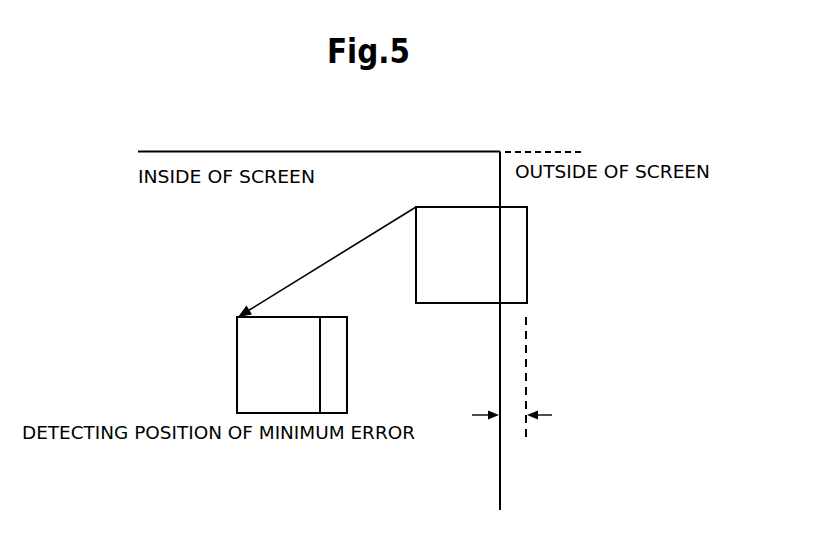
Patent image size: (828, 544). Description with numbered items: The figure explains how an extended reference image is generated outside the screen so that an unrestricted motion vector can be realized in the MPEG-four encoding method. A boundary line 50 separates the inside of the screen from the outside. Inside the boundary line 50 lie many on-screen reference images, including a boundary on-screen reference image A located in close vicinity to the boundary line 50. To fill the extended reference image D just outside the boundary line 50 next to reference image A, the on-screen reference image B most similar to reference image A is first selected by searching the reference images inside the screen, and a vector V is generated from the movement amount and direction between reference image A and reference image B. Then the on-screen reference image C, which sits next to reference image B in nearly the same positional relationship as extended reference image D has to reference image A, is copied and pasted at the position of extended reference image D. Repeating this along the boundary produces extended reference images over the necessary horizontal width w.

The boundary line 50 is at (371, 151).
The on-screen reference image A is at (458, 255).
The most similar on-screen reference image B is at (278, 365).
The on-screen reference image C is at (333, 365).
The extended reference image D is at (513, 255).
The vector V is at (327, 262).
The width w is at (512, 403).